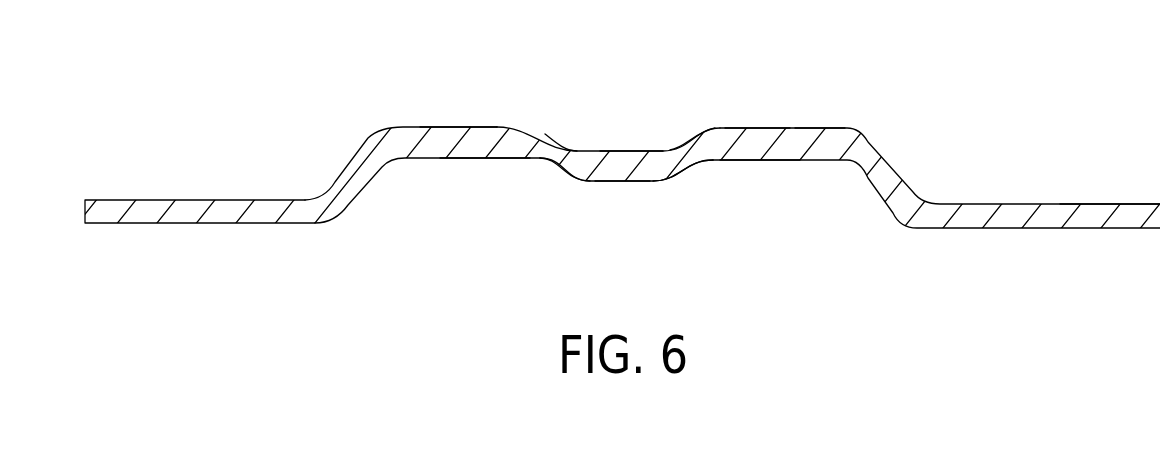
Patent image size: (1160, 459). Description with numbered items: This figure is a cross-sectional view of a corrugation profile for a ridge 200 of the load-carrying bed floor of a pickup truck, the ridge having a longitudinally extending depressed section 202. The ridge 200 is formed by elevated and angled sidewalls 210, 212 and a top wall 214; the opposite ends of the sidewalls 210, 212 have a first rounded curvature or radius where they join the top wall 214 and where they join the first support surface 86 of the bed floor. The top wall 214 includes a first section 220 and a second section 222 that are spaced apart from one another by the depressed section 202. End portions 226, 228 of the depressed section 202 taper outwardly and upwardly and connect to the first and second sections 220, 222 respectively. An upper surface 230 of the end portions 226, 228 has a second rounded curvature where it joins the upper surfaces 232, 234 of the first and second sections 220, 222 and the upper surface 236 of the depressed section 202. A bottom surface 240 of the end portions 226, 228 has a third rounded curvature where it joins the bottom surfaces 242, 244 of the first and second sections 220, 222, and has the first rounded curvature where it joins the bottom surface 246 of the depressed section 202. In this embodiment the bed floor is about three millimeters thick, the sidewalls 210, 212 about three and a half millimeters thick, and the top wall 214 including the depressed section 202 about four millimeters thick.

The ridge 200 is at (580, 166).
The depressed section 202 is at (658, 217).
The sidewall 210 is at (322, 156).
The sidewall 212 is at (943, 158).
The top wall 214 is at (470, 116).
The first section 220 is at (443, 147).
The second section 222 is at (822, 157).
The end portion 226 is at (553, 170).
The end portion 228 is at (683, 143).
The upper surface 230 is at (567, 137).
The upper surface 232 is at (495, 127).
The upper surface 234 is at (783, 127).
The upper surface 236 is at (640, 148).
The bottom surface 240 is at (690, 172).
The bottom surface 242 is at (483, 160).
The bottom surface 244 is at (765, 162).
The bottom surface 246 is at (620, 183).
The first support surface 86 is at (1093, 203).